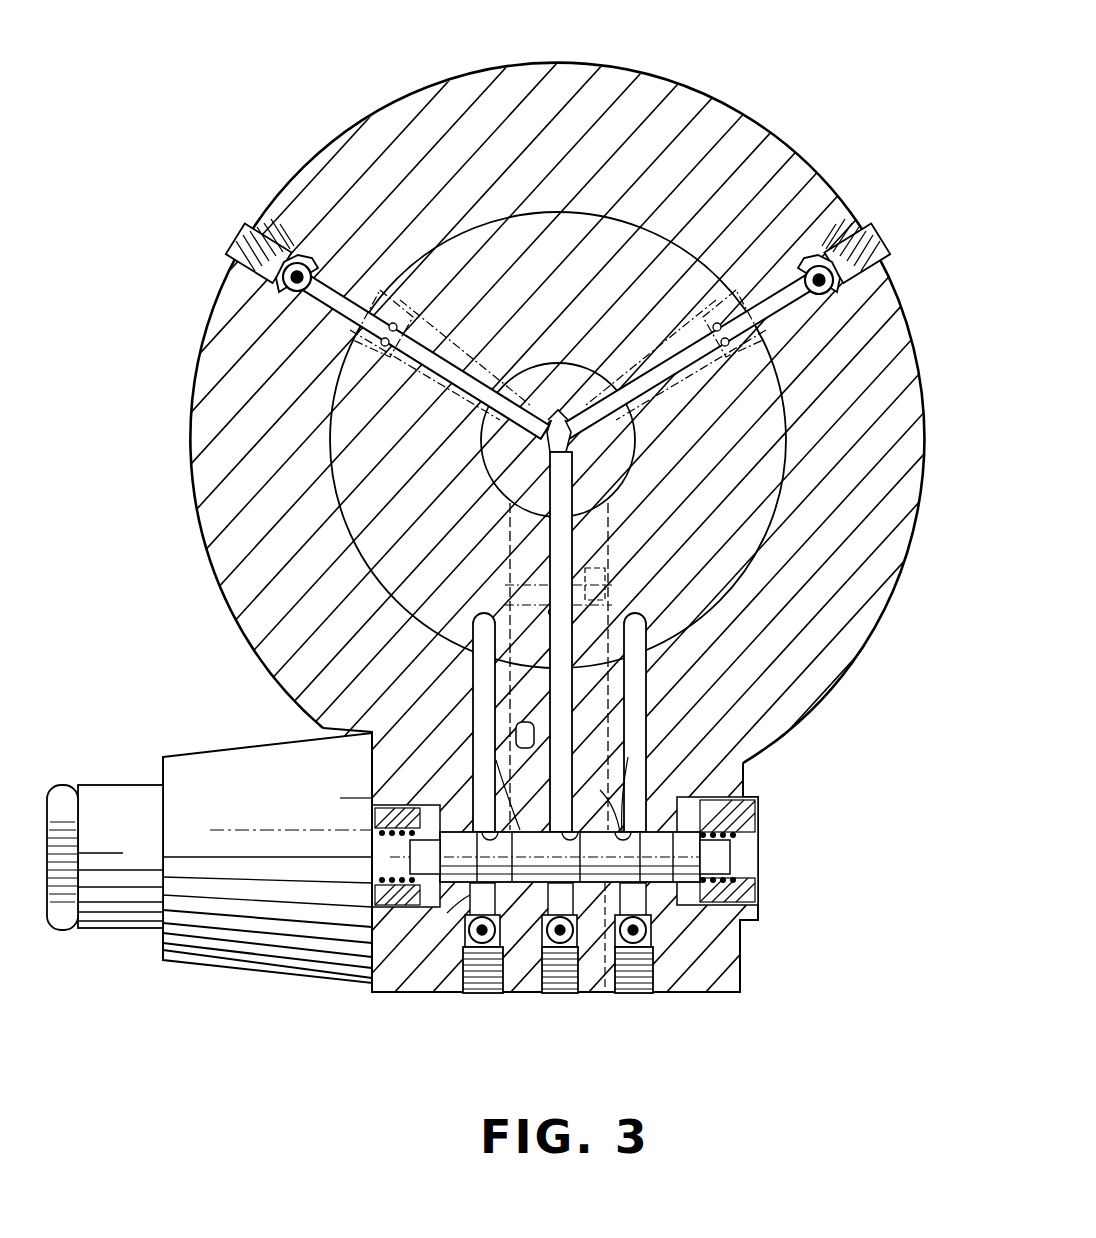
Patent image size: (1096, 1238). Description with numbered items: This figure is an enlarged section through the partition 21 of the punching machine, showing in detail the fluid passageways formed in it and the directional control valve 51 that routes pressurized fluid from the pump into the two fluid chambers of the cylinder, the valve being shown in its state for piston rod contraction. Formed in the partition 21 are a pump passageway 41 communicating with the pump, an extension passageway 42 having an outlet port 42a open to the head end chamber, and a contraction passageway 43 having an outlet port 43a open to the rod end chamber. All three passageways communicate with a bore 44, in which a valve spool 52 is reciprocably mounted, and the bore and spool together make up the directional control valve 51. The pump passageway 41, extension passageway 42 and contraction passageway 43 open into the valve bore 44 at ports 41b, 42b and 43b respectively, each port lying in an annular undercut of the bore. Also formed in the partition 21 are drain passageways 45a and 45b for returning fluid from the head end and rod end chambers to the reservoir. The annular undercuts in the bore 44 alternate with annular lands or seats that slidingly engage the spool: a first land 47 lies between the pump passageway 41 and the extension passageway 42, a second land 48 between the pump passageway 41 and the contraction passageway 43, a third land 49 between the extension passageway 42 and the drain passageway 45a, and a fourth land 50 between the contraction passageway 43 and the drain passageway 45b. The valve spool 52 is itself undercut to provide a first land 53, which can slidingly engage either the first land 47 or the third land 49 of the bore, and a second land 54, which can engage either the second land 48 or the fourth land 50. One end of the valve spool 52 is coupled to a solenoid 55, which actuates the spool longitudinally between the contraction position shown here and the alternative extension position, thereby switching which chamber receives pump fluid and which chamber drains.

The partition 21 is at (733, 108).
The pump passageway 41 is at (550, 686).
The port 41b is at (628, 757).
The extension passageway 42 is at (620, 594).
The outlet port 42a is at (608, 570).
The port 42b is at (608, 993).
The contraction passageway 43 is at (478, 740).
The outlet port 43a is at (516, 730).
The port 43b is at (447, 913).
The bore 44 is at (524, 993).
The drain passageway 45a is at (646, 664).
The drain passageway 45b is at (473, 662).
The first land 47 is at (600, 788).
The second land 48 is at (496, 766).
The third land 49 is at (633, 802).
The fourth land 50 is at (480, 793).
The directional control valve 51 is at (653, 953).
The valve spool 52 is at (660, 913).
The first land 53 is at (590, 993).
The second land 54 is at (470, 940).
The solenoid 55 is at (202, 958).